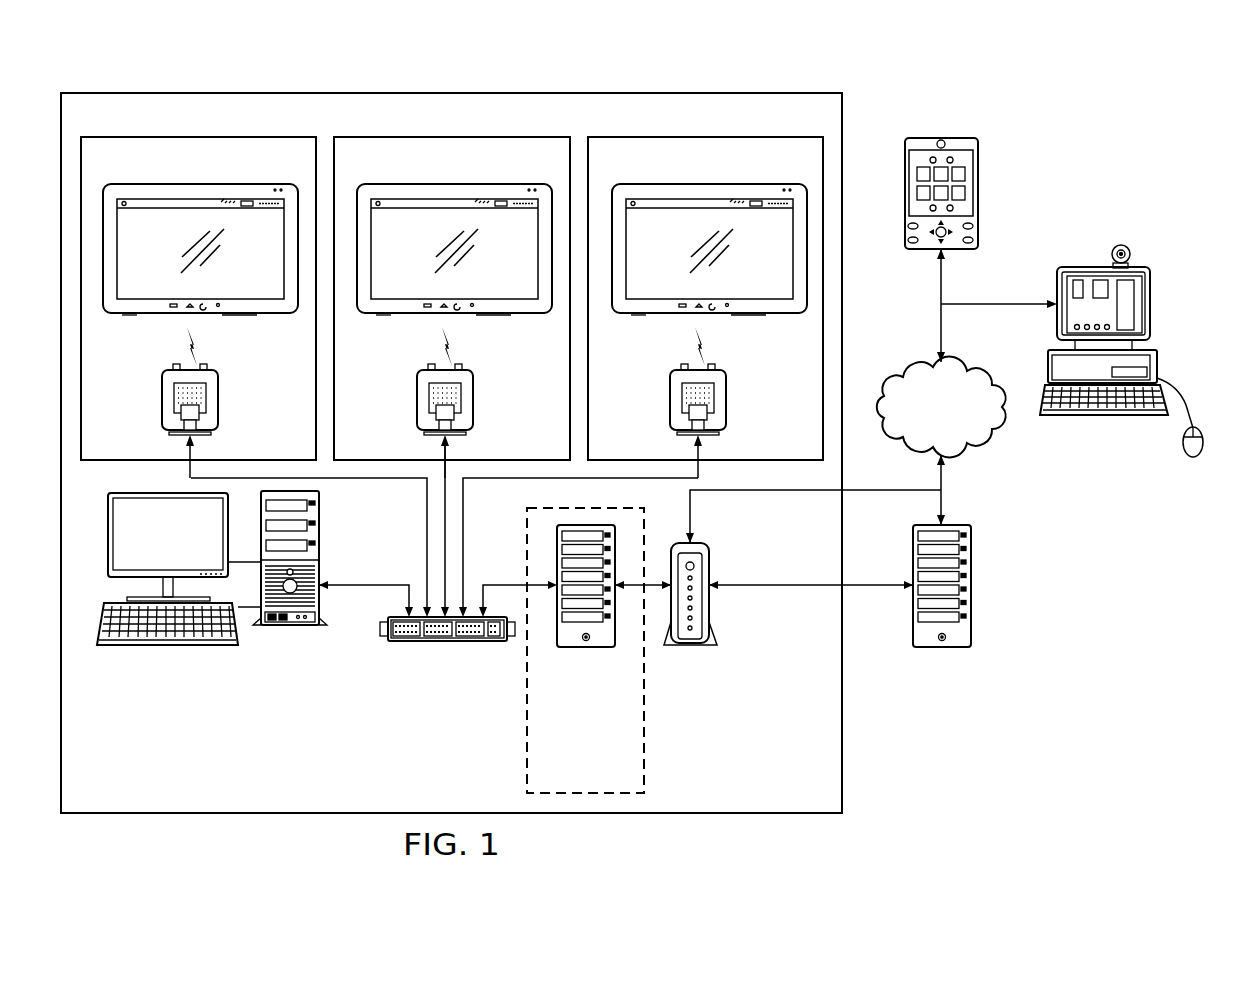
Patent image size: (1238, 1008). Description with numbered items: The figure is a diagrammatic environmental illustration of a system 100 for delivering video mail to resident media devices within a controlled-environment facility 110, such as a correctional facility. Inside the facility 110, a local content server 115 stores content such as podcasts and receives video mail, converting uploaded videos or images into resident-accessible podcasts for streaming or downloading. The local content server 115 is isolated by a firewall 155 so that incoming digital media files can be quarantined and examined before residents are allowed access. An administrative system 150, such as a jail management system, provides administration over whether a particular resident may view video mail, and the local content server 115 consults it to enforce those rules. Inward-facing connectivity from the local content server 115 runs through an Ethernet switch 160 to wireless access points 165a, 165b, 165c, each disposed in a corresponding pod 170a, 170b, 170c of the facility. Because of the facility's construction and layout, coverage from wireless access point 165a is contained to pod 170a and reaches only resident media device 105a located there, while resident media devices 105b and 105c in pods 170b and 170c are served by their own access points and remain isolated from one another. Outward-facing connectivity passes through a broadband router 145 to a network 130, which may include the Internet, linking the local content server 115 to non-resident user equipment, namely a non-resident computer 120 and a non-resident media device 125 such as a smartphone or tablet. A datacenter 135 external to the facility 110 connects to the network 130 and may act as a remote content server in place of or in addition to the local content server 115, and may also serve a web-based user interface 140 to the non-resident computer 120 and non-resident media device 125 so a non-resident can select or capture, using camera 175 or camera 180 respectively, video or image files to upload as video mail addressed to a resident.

The system for delivery of video mail 100 is at (1134, 752).
The resident media device 105a is at (264, 315).
The resident media device 105b is at (518, 315).
The resident media device 105c is at (772, 315).
The controlled-environment facility 110 is at (764, 122).
The local content server 115 is at (585, 648).
The non-resident computer 120 is at (1152, 293).
The non-resident media device 125 is at (980, 175).
The network 130 is at (913, 366).
The datacenter 135 is at (950, 650).
The user interface 140 is at (972, 208).
The broadband router 145 is at (694, 648).
The administrative system 150 is at (231, 674).
The firewall 155 is at (521, 753).
The Ethernet switch 160 is at (435, 647).
The wireless access point 165a is at (162, 400).
The wireless access point 165b is at (417, 400).
The wireless access point 165c is at (726, 398).
The pod 170a is at (288, 173).
The pod 170b is at (542, 173).
The pod 170c is at (796, 173).
The camera 175 is at (1122, 245).
The camera 180 is at (943, 138).